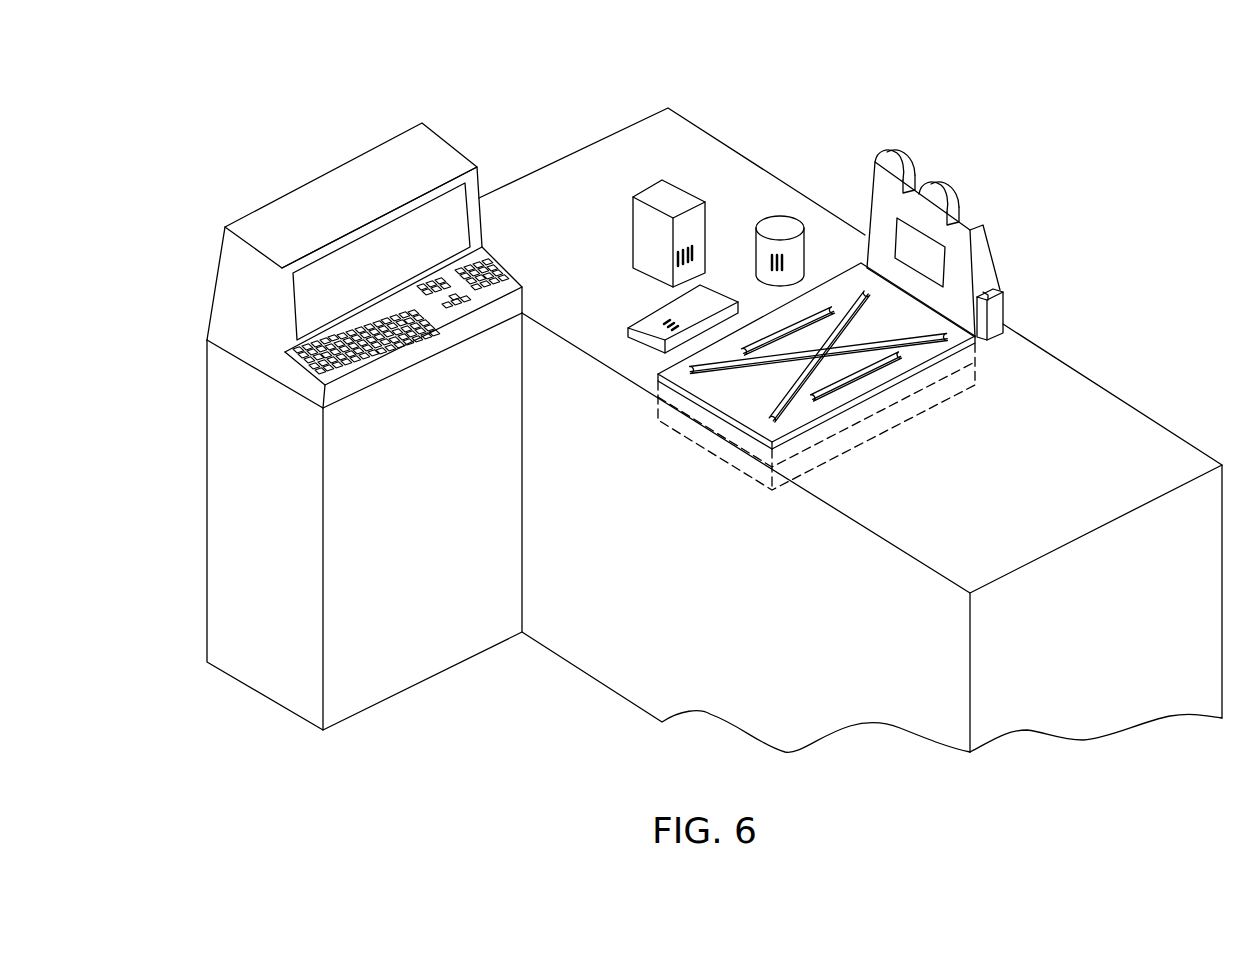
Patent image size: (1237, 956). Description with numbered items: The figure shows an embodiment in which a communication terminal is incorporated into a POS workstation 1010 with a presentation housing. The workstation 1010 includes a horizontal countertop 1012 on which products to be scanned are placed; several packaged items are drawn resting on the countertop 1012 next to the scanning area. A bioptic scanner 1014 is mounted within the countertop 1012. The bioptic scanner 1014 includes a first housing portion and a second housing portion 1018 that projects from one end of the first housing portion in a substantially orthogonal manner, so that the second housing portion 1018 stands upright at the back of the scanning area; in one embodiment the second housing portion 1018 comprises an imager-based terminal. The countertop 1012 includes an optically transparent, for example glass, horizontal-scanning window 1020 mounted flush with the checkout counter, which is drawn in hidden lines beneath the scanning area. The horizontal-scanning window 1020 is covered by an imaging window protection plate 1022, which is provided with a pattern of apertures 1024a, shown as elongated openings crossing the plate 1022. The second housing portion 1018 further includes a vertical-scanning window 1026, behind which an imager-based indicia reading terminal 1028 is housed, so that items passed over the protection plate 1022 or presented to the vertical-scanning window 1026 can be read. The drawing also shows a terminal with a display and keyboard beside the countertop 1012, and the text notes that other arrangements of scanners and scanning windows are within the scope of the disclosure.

The workstation 1010 is at (362, 98).
The horizontal countertop 1012 is at (1140, 476).
The bioptic scanner 1014 is at (1012, 234).
The second housing portion 1018 is at (885, 220).
The horizontal-scanning window 1020 is at (792, 447).
The imaging window protection plate 1022 is at (730, 398).
The apertures 1024a is at (785, 403).
The vertical-scanning window 1026 is at (932, 257).
The imager-based indicia reading terminal 1028 is at (920, 252).